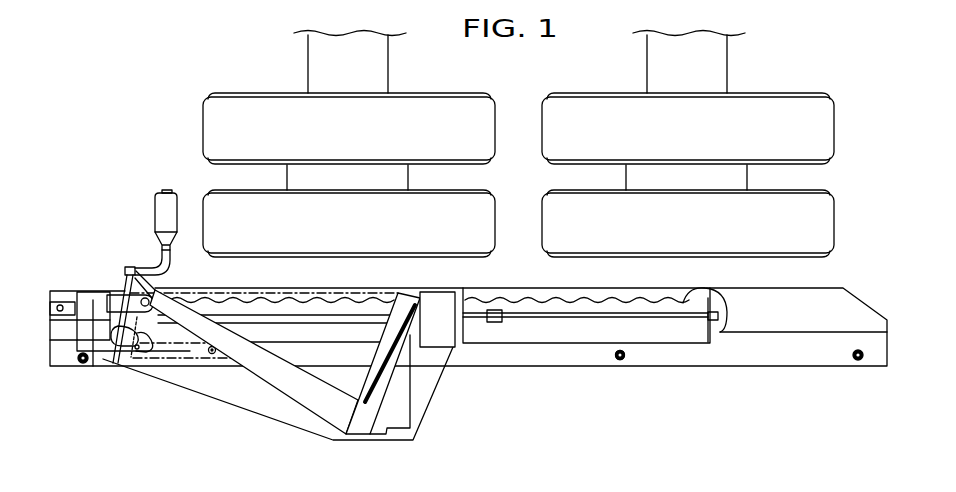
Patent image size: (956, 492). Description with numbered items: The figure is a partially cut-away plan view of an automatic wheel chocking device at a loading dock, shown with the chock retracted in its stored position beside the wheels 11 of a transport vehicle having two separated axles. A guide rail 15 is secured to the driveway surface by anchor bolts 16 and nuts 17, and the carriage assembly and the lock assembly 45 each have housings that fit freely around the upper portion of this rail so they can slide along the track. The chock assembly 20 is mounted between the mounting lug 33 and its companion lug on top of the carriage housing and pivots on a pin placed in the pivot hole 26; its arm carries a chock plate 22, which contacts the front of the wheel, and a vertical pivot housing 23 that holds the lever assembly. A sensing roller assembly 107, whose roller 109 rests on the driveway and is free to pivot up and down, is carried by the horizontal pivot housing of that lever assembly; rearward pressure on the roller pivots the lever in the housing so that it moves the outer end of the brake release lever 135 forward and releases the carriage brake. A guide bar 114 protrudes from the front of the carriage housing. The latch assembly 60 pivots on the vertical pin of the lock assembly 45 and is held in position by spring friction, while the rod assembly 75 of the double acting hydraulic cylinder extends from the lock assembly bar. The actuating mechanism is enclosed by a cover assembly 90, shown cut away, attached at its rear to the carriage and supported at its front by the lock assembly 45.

The wheels 11 is at (368, 258).
The guide rail 15 is at (803, 367).
The anchor bolts 16 is at (618, 360).
The nuts 17 is at (622, 360).
The chock assembly 20 is at (277, 395).
The chock plate 22 is at (366, 398).
The vertical pivot housing 23 is at (128, 266).
The pivot hole 26 is at (158, 292).
The mounting lug 33 is at (93, 291).
The lock assembly 45 is at (457, 348).
The latch assembly 60 is at (173, 367).
The rod assembly 75 is at (60, 301).
The cover assembly 90 is at (310, 434).
The sensing roller assembly 107 is at (155, 212).
The roller 109 is at (152, 262).
The guide bar 114 is at (110, 358).
The brake release lever 135 is at (131, 364).